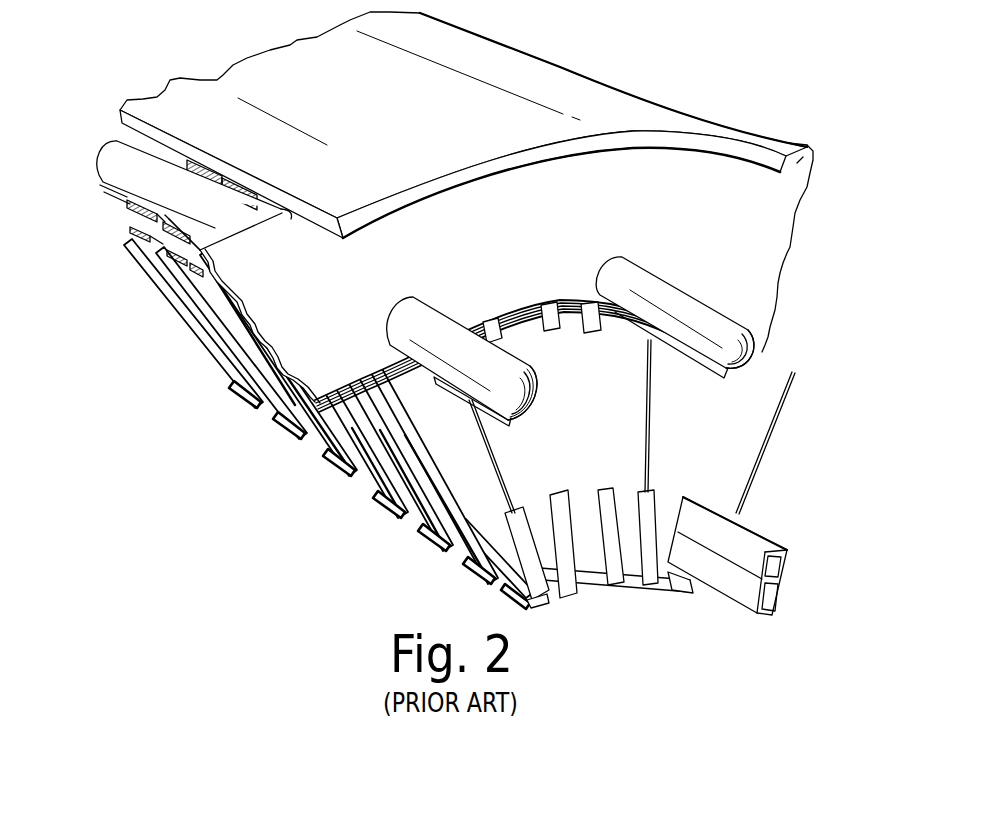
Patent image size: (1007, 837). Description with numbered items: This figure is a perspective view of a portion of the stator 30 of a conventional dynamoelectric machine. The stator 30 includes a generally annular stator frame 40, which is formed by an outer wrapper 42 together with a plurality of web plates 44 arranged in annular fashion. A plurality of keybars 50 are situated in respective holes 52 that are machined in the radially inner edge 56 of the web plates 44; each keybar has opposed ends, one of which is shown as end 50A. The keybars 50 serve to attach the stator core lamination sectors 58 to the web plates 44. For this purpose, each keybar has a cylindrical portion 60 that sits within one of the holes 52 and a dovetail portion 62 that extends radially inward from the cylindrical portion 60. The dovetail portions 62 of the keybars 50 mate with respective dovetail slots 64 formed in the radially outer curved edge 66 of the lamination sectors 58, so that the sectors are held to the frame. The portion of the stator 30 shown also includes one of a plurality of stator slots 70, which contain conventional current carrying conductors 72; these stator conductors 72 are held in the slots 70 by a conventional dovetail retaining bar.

The stator 30 is at (59, 190).
The stator frame 40 is at (488, 207).
The outer wrapper 42 is at (572, 100).
The web plates 44 is at (753, 278).
The keybars 50 is at (523, 414).
The end of keybar 50A is at (533, 381).
The holes 52 is at (413, 293).
The radially inner edge 56 is at (342, 386).
The lamination sectors 58 is at (723, 458).
The cylindrical portion 60 is at (528, 392).
The dovetail portion 62 is at (505, 427).
The dovetail slots 64 is at (590, 332).
The radially outer curved edge 66 is at (648, 333).
The stator slots 70 is at (658, 535).
The current carrying conductors 72 is at (762, 534).